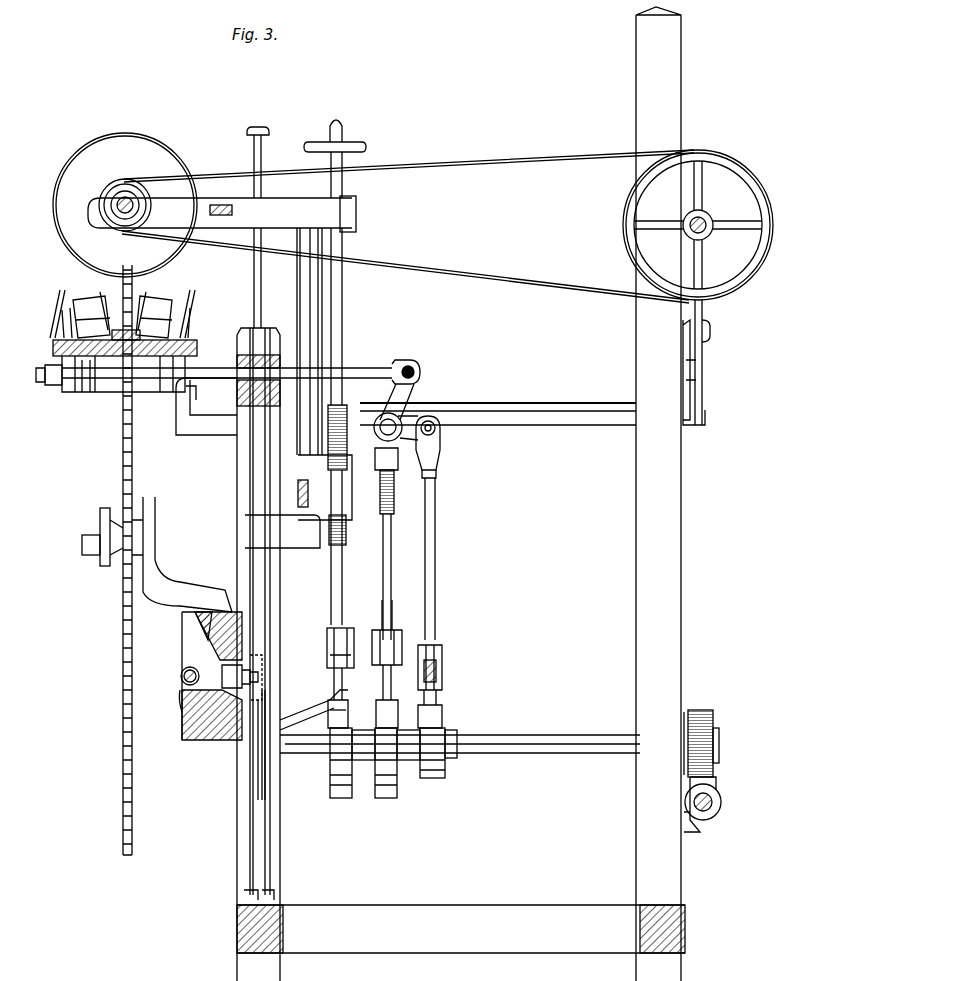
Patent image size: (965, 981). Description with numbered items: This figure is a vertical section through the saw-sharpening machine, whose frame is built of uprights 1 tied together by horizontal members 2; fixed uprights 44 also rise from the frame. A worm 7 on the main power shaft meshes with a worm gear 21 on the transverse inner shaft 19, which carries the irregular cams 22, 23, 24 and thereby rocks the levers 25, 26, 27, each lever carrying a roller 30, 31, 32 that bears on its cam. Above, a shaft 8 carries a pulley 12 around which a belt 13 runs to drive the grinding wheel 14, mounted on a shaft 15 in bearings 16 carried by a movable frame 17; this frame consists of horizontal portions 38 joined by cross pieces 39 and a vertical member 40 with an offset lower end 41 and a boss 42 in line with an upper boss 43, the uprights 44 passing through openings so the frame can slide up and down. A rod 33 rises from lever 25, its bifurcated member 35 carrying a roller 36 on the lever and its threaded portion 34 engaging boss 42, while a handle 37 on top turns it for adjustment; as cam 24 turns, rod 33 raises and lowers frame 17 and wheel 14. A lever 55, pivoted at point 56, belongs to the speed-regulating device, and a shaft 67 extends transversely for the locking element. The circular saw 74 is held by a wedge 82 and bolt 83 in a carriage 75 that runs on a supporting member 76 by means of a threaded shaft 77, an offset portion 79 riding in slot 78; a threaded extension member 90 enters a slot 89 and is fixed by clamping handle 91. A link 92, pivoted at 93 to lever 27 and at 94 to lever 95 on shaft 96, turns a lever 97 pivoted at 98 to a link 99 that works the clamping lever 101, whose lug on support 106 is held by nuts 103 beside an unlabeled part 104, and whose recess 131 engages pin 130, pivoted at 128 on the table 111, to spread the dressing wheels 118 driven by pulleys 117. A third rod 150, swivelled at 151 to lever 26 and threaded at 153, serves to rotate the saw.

The upright 1 is at (237, 927).
The horizontal member 2 is at (684, 584).
The worm 7 is at (722, 802).
The shaft 8 is at (705, 215).
The pulley 12 is at (712, 152).
The belt 13 is at (520, 160).
The grinding wheel 14 is at (120, 140).
The shaft 15 is at (122, 197).
The bearing 16 is at (104, 190).
The movable frame 17 is at (172, 208).
The inner shaft 19 is at (534, 754).
The worm gear 21 is at (704, 712).
The cam 22 is at (445, 728).
The cam 23 is at (392, 724).
The cam 24 is at (352, 748).
The lever 25 is at (312, 705).
The lever 26 is at (396, 652).
The lever 27 is at (442, 670).
The roller 30 is at (442, 708).
The roller 31 is at (394, 690).
The roller 32 is at (347, 708).
The rod 33 is at (331, 578).
The threaded portion 34 is at (347, 540).
The bifurcated member 35 is at (346, 632).
The roller 36 is at (344, 684).
The handle 37 is at (350, 146).
The horizontally extending portion 38 is at (288, 204).
The cross piece 39 is at (222, 205).
The vertically extending member 40 is at (300, 318).
The offset lower end portion 41 is at (244, 536).
The boss 42 is at (349, 510).
The boss 43 is at (348, 216).
The fixed upright 44 is at (250, 462).
The lever 55 is at (704, 385).
The pivot point 56 is at (708, 326).
The shaft 67 is at (555, 426).
The circular saw 74 is at (123, 628).
The carriage 75 is at (180, 590).
The supporting member 76 is at (216, 742).
The threaded shaft 77 is at (182, 684).
The slot 78 is at (222, 614).
The offset portion 79 is at (200, 628).
The wedge 82 is at (100, 520).
The bolt 83 is at (88, 555).
The slot 89 is at (200, 712).
The threaded extension member 90 is at (230, 682).
The clamping handle 91 is at (250, 740).
The link 92 is at (436, 578).
The pivot 93 is at (442, 684).
The pivot 94 is at (436, 444).
The lever 95 is at (407, 415).
The shaft 96 is at (392, 440).
The lever 97 is at (385, 402).
The pivot 98 is at (413, 372).
The link 99 is at (304, 368).
The clamping lever 101 is at (88, 394).
The nut 103 is at (55, 372).
The bolt 104 is at (45, 380).
The support 106 is at (186, 414).
The table 111 is at (68, 324).
The pulley 117 is at (60, 290).
The dressing wheel 118 is at (115, 300).
The pivot 128 is at (180, 344).
The pin 130 is at (185, 362).
The recess 131 is at (197, 376).
The rod 150 is at (392, 558).
The swivel connection 151 is at (392, 614).
The threaded end 153 is at (394, 498).